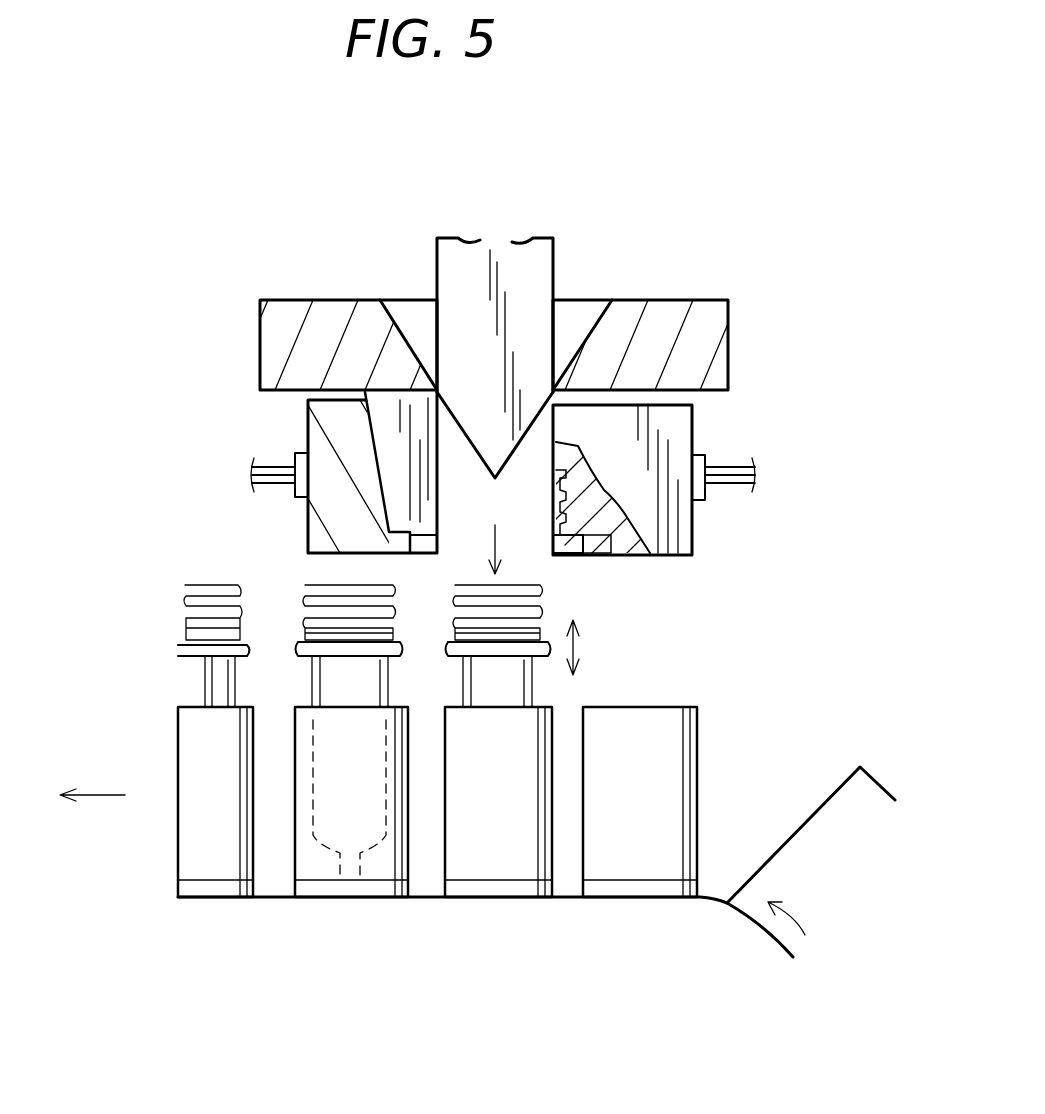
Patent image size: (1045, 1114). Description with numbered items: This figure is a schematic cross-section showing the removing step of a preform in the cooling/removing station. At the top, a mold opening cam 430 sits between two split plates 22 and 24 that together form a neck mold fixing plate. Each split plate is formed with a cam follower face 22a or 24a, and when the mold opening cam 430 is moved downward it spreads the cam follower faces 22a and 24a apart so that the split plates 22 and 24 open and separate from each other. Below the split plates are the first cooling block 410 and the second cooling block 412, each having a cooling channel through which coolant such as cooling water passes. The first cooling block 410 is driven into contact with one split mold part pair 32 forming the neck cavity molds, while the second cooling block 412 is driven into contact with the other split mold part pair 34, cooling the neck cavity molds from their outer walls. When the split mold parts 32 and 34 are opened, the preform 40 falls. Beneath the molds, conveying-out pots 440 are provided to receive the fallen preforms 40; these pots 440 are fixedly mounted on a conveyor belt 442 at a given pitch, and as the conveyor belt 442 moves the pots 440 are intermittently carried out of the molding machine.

The split plate 22 is at (728, 350).
The cam follower face 22a is at (595, 330).
The split plate 24 is at (268, 342).
The cam follower face 24a is at (408, 330).
The split mold part pair 32 is at (604, 555).
The split mold part pair 34 is at (405, 432).
The preform 40 is at (455, 632).
The first cooling block 410 is at (683, 520).
The second cooling block 412 is at (310, 517).
The mold opening cam 430 is at (532, 268).
The conveying-out pot 440 is at (653, 718).
The conveyor belt 442 is at (752, 921).